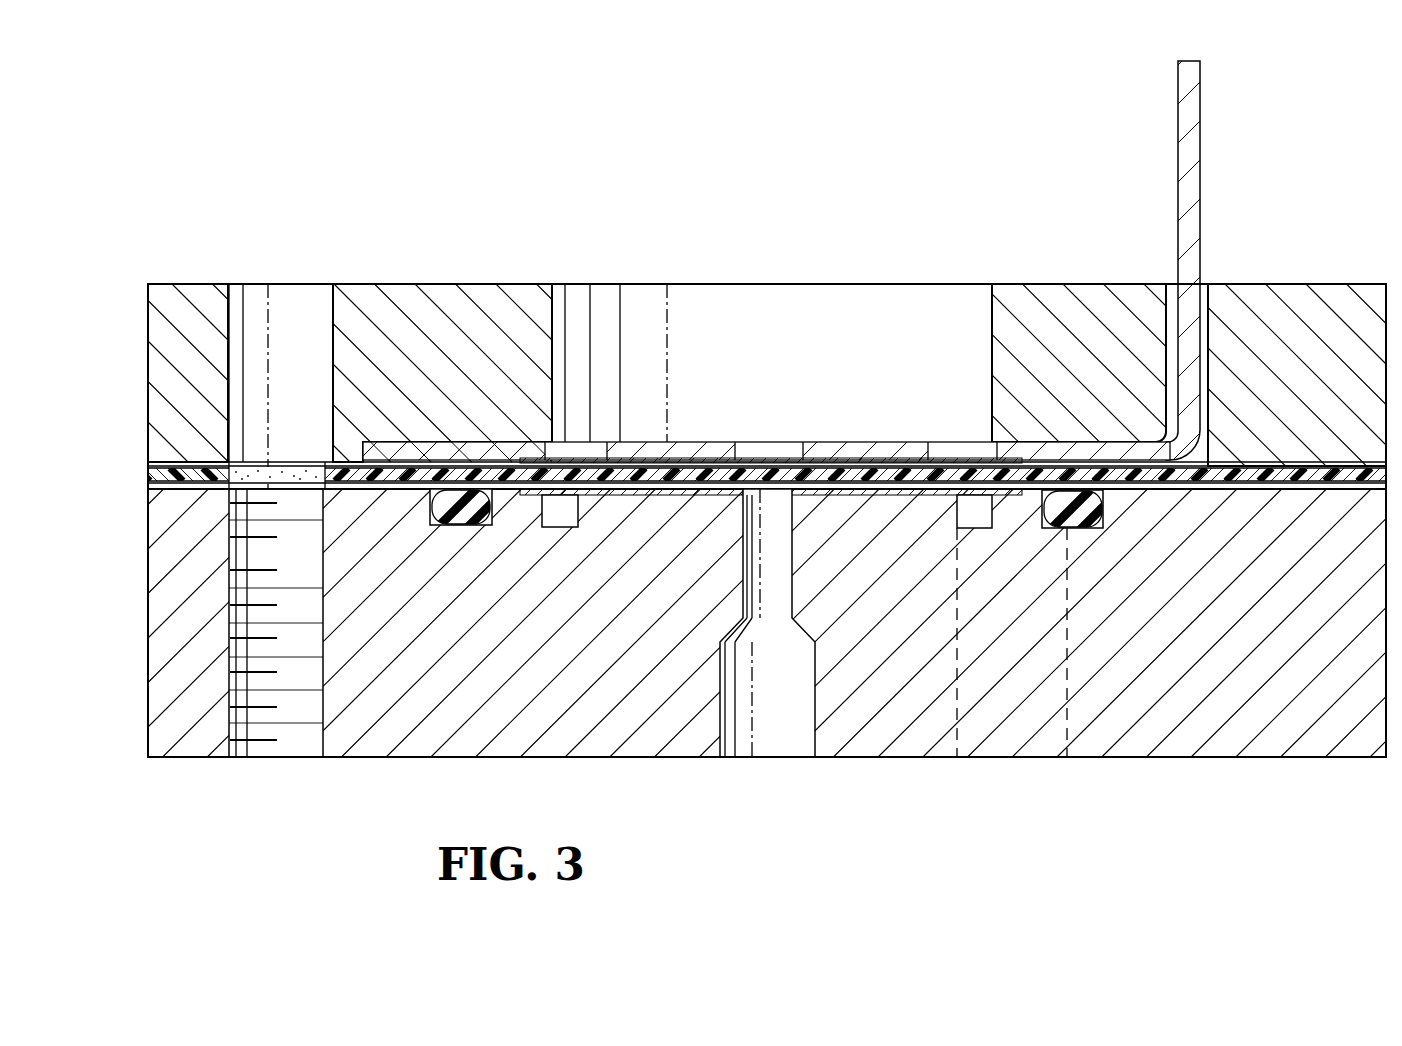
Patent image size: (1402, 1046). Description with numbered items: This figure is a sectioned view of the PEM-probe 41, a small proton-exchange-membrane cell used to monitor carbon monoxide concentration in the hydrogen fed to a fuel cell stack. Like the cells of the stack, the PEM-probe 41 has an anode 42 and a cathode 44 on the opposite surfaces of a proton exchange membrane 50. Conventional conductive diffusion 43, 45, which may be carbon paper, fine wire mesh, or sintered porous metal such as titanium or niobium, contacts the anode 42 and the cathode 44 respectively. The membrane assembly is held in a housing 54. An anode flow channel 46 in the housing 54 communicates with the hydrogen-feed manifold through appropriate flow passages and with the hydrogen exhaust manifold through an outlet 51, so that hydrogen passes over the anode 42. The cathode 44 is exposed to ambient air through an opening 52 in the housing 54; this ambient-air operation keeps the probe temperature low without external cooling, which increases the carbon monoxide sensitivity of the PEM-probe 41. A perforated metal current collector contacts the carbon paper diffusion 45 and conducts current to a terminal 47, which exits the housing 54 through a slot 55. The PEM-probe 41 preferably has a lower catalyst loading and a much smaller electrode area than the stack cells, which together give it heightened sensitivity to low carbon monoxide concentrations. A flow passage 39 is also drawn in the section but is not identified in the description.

The PEM-probe 41 is at (733, 454).
The housing 54 is at (147, 703).
The proton exchange membrane 50 is at (348, 472).
The cathode 44 is at (494, 472).
The opening 52 is at (992, 363).
The slot 55 is at (1171, 303).
The terminal 47 is at (1196, 223).
The conductive diffusion 43 is at (767, 342).
The sensing membrane 39 is at (828, 450).
The conductive diffusion 45 is at (963, 463).
The anode 42 is at (508, 483).
The anode flow channel 46 is at (977, 517).
The outlet 51 is at (768, 718).